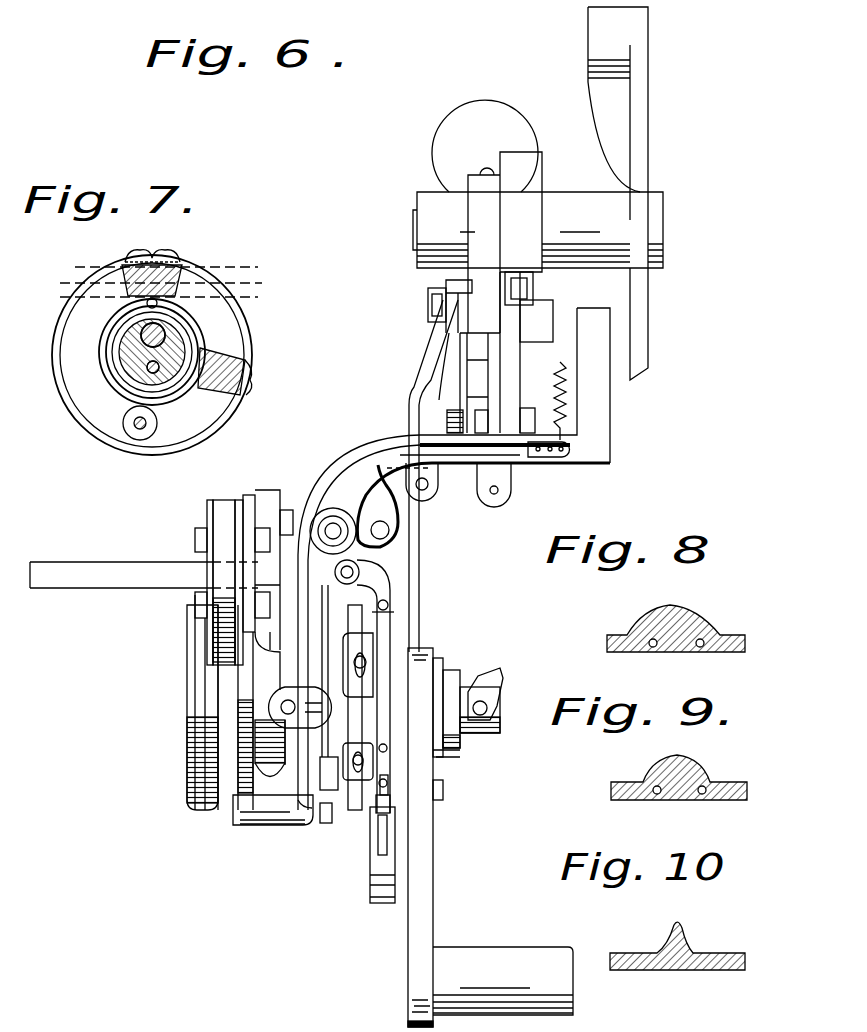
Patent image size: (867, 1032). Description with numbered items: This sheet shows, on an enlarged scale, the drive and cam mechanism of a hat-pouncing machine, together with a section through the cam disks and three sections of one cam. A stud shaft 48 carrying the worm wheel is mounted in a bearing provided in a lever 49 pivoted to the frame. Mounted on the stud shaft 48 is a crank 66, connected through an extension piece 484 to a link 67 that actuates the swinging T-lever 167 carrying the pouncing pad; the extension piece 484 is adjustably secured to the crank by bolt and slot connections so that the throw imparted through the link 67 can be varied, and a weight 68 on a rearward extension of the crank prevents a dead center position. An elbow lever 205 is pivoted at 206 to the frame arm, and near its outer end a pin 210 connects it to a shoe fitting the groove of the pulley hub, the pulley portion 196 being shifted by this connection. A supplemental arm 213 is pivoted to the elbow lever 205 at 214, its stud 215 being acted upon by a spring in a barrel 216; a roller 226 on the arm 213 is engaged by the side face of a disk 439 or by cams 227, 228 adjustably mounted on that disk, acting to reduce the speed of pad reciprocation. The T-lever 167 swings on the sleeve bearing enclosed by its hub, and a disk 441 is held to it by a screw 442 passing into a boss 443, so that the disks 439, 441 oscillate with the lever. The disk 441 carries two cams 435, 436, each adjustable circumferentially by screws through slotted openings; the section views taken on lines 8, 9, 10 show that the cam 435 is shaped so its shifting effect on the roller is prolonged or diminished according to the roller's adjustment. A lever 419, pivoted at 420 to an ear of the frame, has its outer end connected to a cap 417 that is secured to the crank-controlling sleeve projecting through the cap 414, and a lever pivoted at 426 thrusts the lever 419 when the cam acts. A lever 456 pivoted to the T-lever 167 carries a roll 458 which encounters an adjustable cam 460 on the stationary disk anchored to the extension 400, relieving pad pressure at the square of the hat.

In FIG. 6, the weight 68 is at (485, 110).
In FIG. 6, the lever 49 is at (650, 132).
In FIG. 6, the stud shaft 48 is at (433, 200).
In FIG. 6, the crank 66 is at (480, 215).
In FIG. 6, the extension piece 484 is at (442, 283).
In FIG. 6, the link 67 is at (412, 392).
In FIG. 6, the pivot 426 is at (428, 490).
In FIG. 6, the pivot 420 is at (499, 490).
In FIG. 6, the elbow lever 205 is at (356, 458).
In FIG. 6, the pivot 206 is at (330, 522).
In FIG. 6, the pivot 214 is at (360, 572).
In FIG. 6, the clutch 196 is at (222, 572).
In FIG. 6, the extension 400 is at (82, 574).
In FIG. 6, the barrel 216 is at (245, 805).
In FIG. 6, the stud 215 is at (292, 822).
In FIG. 6, the supplemental arm 213 is at (327, 825).
In FIG. 6, the roller 226 is at (255, 806).
In FIG. 6, the pin 210 is at (282, 706).
In FIG. 6, the disk 439 is at (356, 622).
In FIG. 6, the cam 227 is at (352, 672).
In FIG. 6, the cam 228 is at (348, 755).
In FIG. 6, the T-lever 167 is at (422, 911).
In FIG. 6, the cap 414 is at (462, 755).
In FIG. 6, the cap 417 is at (462, 745).
In FIG. 6, the lever 419 is at (492, 692).
In FIG. 6, the screw 442 is at (445, 790).
In FIG. 7, the screw 442 is at (140, 430).
In FIG. 6, the cam 460 is at (388, 783).
In FIG. 6, the roll 458 is at (384, 805).
In FIG. 6, the lever 456 is at (382, 900).
In FIG. 7, the disk 441 is at (90, 392).
In FIG. 7, the boss 443 is at (133, 426).
In FIG. 7, the cam 435 is at (120, 266).
In FIG. 8, the cam 435 is at (697, 618).
In FIG. 9, the cam 435 is at (688, 770).
In FIG. 10, the cam 435 is at (682, 938).
In FIG. 7, the cam 436 is at (248, 388).
In FIG. 7, the section line 8 is at (167, 268).
In FIG. 7, the section line 9 is at (160, 284).
In FIG. 7, the section line 10 is at (162, 300).